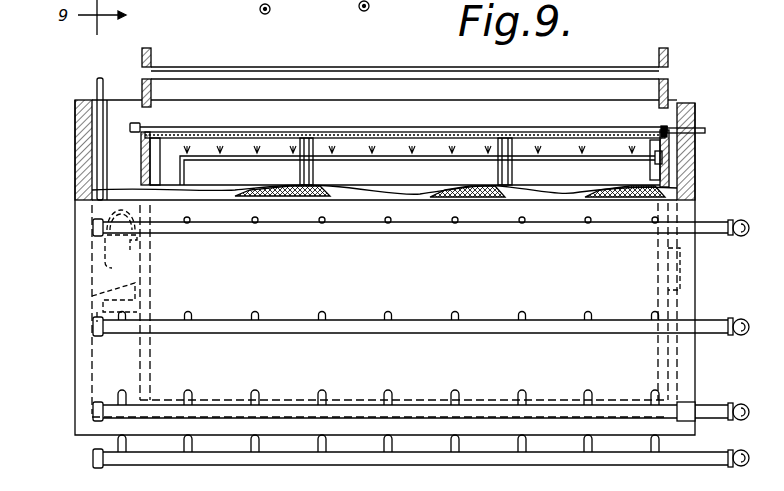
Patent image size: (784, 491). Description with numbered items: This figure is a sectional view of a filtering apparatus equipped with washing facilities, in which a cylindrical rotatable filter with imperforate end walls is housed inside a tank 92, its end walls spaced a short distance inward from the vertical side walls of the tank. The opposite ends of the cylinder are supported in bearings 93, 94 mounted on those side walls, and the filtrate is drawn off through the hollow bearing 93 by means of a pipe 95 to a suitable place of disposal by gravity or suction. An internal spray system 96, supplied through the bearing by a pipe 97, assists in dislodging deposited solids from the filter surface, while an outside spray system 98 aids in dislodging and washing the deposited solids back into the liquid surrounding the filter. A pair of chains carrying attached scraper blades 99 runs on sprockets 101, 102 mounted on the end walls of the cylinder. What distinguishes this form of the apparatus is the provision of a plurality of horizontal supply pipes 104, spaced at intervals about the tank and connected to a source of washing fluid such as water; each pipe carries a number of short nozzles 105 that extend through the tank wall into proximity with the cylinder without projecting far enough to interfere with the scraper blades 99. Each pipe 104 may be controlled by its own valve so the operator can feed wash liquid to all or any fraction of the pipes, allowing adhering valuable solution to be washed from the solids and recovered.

The tank 92 is at (697, 166).
The hollow bearing 93 is at (100, 291).
The bearing 94 is at (677, 258).
The filtrate pipe 95 is at (95, 253).
The internal spray system 96 is at (200, 158).
The supply pipe 97 is at (80, 151).
The outside spray system 98 is at (405, 144).
The scraper blades 99 is at (563, 56).
The sprocket 101 is at (668, 129).
The sprocket 102 is at (140, 127).
The horizontal supply pipes 104 is at (433, 228).
The short nozzles 105 is at (432, 480).